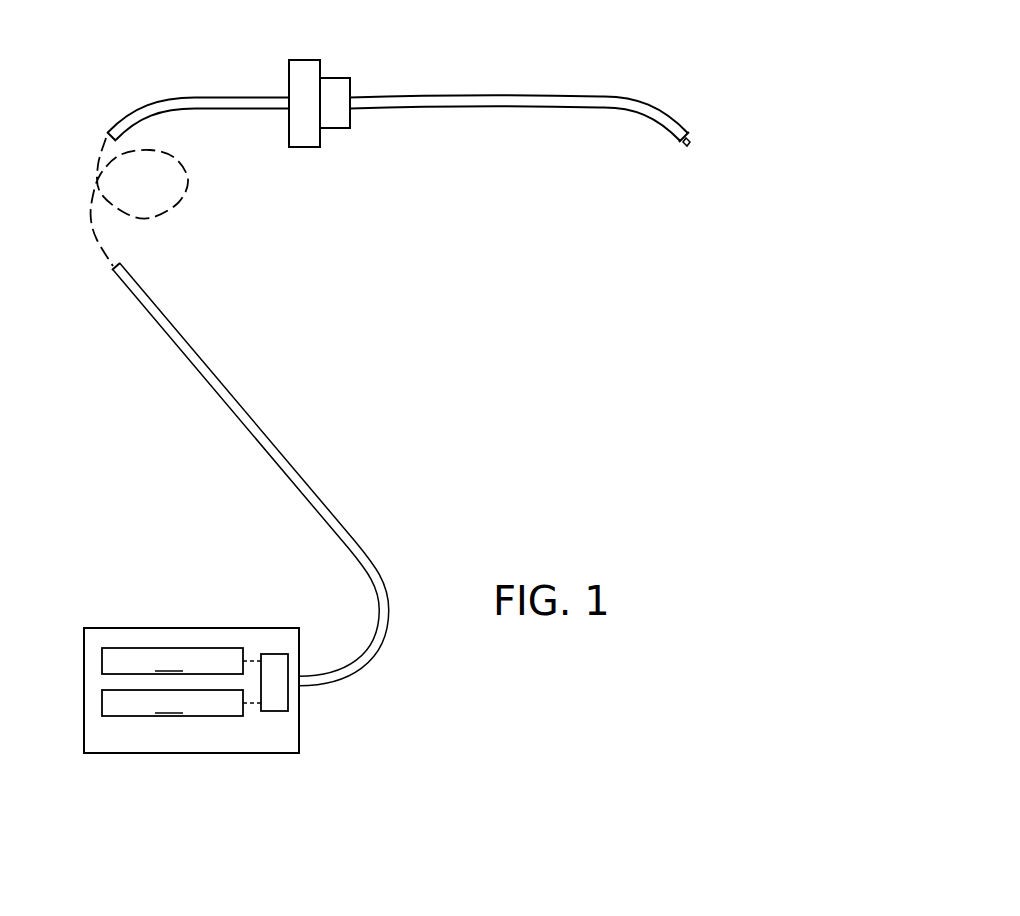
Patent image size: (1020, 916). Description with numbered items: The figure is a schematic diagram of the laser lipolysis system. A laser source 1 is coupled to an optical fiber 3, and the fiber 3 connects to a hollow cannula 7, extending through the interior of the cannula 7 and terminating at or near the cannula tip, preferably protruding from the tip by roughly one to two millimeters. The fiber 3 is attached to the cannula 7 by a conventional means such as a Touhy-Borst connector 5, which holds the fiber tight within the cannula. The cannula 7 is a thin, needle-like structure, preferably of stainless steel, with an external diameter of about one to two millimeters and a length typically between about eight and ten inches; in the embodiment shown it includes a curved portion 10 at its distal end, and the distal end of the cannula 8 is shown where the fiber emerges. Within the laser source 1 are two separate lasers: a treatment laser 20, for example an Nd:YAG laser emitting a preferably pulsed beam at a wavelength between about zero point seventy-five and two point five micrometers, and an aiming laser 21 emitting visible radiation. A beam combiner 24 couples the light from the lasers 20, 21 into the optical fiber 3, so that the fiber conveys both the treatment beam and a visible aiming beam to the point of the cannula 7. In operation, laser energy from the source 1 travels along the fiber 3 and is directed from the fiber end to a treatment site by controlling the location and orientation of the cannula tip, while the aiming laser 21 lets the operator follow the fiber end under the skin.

The laser source 1 is at (113, 628).
The optical fiber 3 is at (217, 97).
The Touhy-Borst connector 5 is at (305, 60).
The cannula 7 is at (443, 96).
The connector 8 is at (693, 141).
The curved portion 10 is at (668, 62).
The treatment laser 20 is at (172, 660).
The aiming laser 21 is at (172, 702).
The beam combiner 24 is at (276, 654).